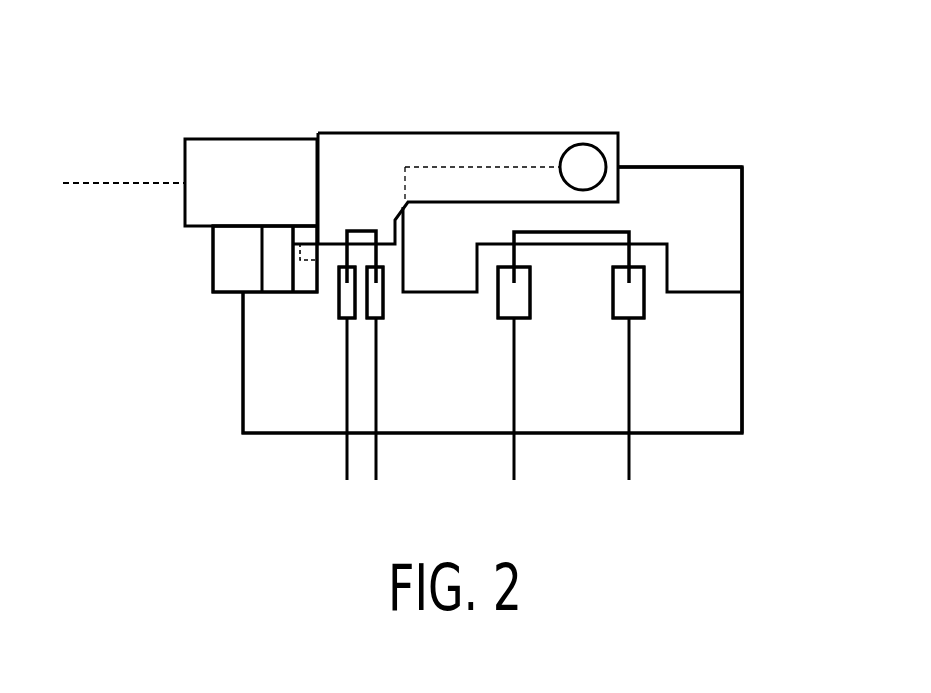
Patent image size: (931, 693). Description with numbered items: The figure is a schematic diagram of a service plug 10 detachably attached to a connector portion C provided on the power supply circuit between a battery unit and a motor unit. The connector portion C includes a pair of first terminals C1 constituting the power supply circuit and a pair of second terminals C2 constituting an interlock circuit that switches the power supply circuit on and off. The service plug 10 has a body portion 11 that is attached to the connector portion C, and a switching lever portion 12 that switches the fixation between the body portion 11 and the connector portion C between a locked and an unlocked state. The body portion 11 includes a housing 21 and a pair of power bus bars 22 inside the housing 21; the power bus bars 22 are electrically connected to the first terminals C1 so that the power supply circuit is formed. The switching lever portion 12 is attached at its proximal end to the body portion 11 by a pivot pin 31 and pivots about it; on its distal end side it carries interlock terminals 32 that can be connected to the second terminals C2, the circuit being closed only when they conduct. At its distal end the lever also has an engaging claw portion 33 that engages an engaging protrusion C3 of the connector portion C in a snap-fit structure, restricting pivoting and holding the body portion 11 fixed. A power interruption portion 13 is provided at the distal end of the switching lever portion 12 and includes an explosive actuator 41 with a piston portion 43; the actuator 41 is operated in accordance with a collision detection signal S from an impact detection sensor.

The service plug 10 is at (728, 81).
The body portion 11 is at (718, 170).
The switching lever portion 12 is at (381, 133).
The power interruption portion 13 is at (207, 139).
The housing 21 is at (742, 200).
The power bus bars 22 is at (511, 257).
The pivot pin 31 is at (592, 146).
The interlock terminals 32 is at (344, 256).
The engaging claw portion 33 is at (294, 238).
The explosive actuator 41 is at (231, 275).
The piston portion 43 is at (213, 272).
The collision detection signal S is at (88, 181).
The connector portion C is at (742, 375).
The first terminals C1 is at (523, 313).
The second terminals C2 is at (350, 317).
The engaging protrusion C3 is at (317, 245).